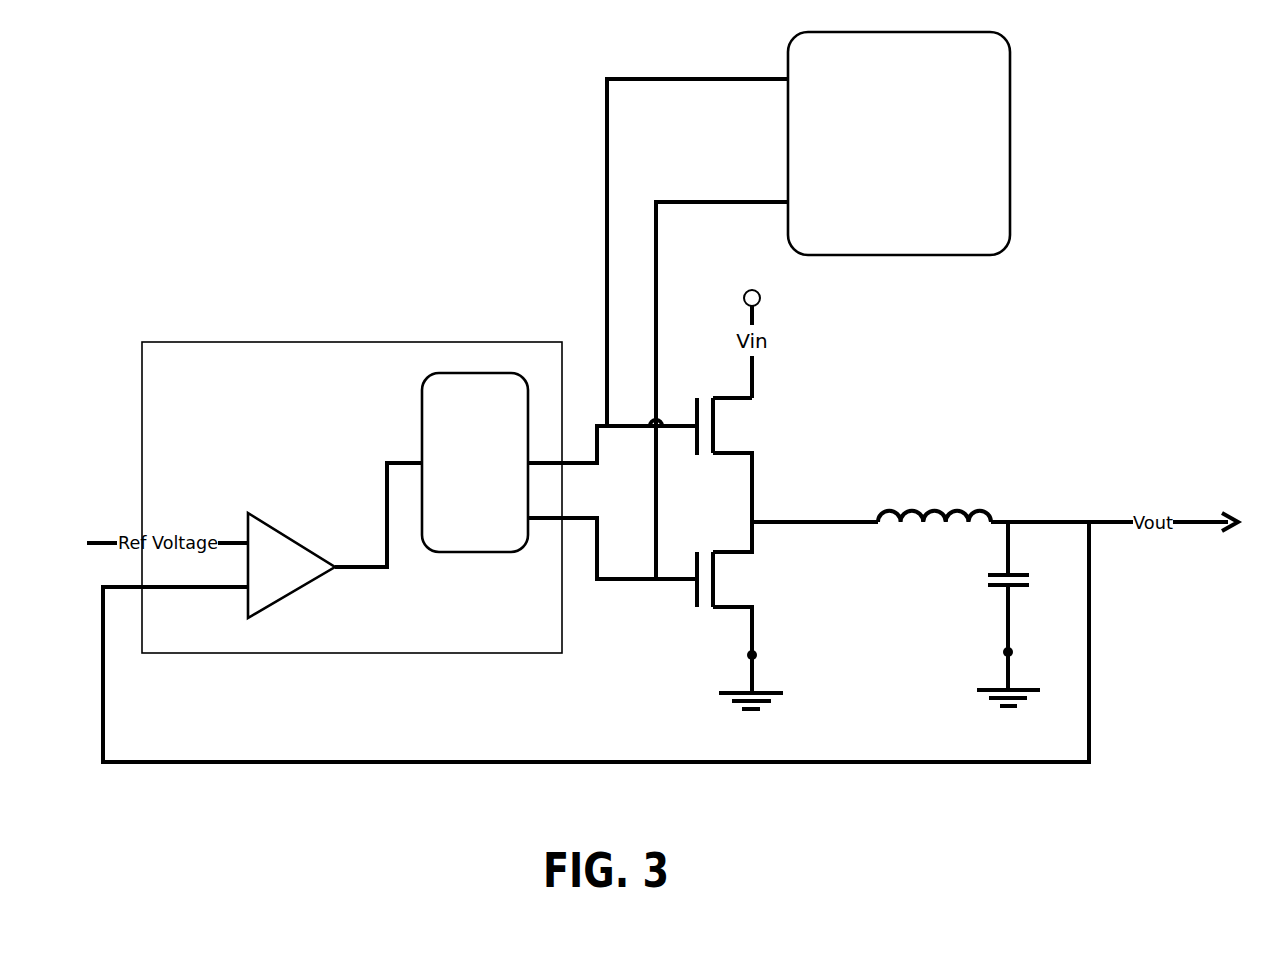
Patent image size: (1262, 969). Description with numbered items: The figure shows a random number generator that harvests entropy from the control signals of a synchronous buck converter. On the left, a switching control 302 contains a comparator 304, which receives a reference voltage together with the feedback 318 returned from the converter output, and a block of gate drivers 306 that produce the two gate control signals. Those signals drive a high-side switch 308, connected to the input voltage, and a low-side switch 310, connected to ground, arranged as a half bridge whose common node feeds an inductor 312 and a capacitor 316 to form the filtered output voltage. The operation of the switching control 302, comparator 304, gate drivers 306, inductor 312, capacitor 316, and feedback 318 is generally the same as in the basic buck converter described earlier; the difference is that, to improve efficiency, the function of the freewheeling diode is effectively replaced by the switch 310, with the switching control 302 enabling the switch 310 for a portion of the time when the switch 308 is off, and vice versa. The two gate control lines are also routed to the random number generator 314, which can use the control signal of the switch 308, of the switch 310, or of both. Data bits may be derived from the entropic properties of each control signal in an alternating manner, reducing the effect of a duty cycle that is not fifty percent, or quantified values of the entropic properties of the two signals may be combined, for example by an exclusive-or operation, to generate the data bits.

The switching control 302 is at (287, 342).
The comparator 304 is at (285, 533).
The gate drivers 306 is at (490, 380).
The switch 308 is at (751, 427).
The switch 310 is at (751, 580).
The inductor 312 is at (932, 503).
The random number generator 314 is at (967, 32).
The capacitor 316 is at (1010, 570).
The feedback 318 is at (873, 761).